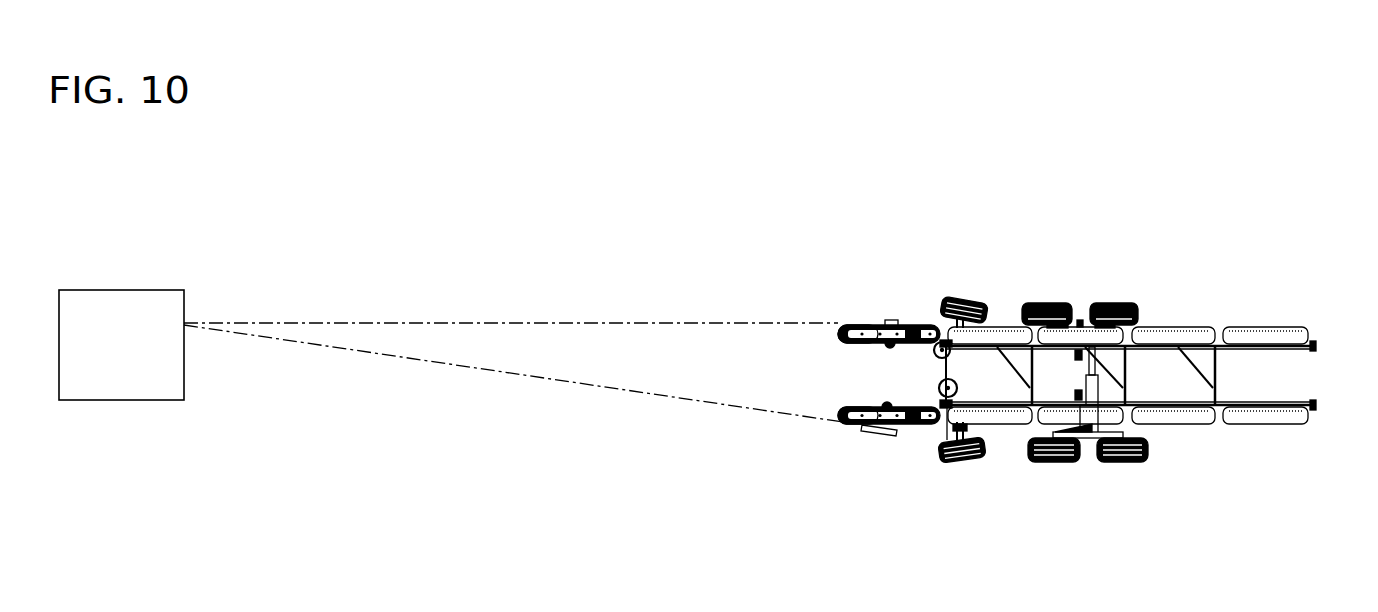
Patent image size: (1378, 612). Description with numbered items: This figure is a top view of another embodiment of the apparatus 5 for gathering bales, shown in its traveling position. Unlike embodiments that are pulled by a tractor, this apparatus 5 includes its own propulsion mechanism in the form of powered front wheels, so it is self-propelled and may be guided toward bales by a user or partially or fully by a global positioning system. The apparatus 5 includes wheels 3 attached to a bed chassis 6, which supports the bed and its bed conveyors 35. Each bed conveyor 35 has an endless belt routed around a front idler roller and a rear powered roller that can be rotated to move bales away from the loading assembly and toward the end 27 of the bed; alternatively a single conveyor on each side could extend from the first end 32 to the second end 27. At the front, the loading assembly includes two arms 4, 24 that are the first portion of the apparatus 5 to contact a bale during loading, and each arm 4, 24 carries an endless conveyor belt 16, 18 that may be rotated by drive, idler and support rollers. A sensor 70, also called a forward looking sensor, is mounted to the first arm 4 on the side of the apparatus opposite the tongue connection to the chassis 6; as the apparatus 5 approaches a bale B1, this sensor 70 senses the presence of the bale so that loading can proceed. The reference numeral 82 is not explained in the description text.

The bale B1 is at (121, 345).
The wheels 3 is at (1105, 303).
The first arm 4 is at (855, 341).
The apparatus for gathering bales 5 is at (1136, 254).
The bed chassis 6 is at (985, 348).
The endless conveyor belt 16 is at (836, 333).
The endless conveyor belt 18 is at (835, 413).
The second arm 24 is at (858, 408).
The second end of the bed 27 is at (1317, 408).
The first end of the bed 32 is at (940, 392).
The bed conveyors 35 is at (948, 326).
The sensor 70 is at (893, 319).
The front axle 82 is at (957, 476).